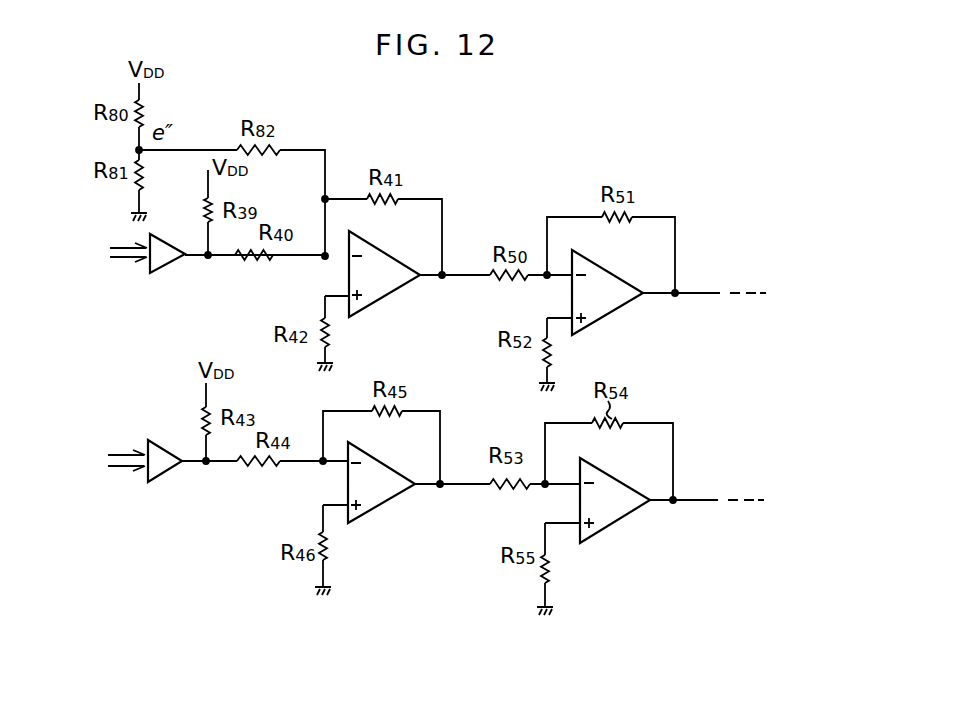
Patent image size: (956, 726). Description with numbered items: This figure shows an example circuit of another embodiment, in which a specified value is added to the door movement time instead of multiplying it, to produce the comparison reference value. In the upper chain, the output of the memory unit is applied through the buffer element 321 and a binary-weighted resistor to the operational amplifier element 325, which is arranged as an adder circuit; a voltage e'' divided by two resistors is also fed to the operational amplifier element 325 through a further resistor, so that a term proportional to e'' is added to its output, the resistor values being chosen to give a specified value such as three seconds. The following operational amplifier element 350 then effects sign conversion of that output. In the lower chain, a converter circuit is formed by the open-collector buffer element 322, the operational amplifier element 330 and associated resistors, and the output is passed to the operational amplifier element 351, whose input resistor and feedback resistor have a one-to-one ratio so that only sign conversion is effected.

The buffer element 321 is at (165, 268).
The buffer element 322 is at (165, 475).
The operational amplifier element 325 is at (398, 288).
The operational amplifier element 330 is at (393, 498).
The operational amplifier element 350 is at (622, 307).
The operational amplifier element 351 is at (628, 513).